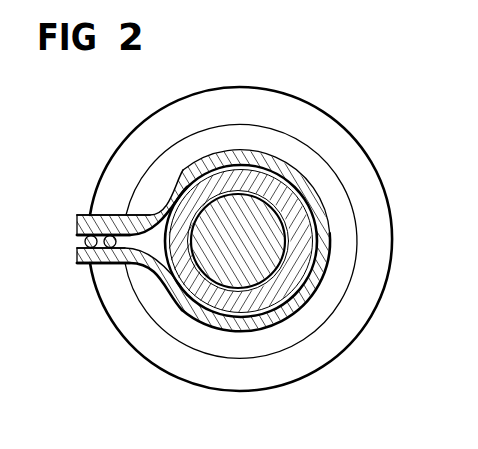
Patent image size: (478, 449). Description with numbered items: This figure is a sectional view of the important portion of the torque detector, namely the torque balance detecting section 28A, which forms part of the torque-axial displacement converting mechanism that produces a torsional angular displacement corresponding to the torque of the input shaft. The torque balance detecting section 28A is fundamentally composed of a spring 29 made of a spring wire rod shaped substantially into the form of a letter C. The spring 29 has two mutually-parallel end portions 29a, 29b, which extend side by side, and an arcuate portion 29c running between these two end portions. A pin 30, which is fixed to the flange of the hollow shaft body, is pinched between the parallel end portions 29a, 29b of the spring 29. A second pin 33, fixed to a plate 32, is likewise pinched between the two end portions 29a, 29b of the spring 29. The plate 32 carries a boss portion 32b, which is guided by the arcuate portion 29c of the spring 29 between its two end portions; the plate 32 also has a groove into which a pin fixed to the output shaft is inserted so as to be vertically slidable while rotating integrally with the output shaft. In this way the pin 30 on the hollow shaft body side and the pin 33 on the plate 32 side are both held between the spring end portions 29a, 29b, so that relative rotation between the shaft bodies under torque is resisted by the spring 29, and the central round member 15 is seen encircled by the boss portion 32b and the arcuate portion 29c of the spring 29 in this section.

The tube 15 is at (265, 233).
The torque balance detecting section 28A is at (338, 369).
The spring 29 is at (164, 306).
The end portion of the spring 29a is at (112, 213).
The end portion of the spring 29b is at (100, 262).
The arcuate portion of the spring 29c is at (317, 278).
The pin 30 is at (77, 229).
The plate 32 is at (371, 150).
The boss portion 32b is at (290, 203).
The pin 33 is at (90, 247).